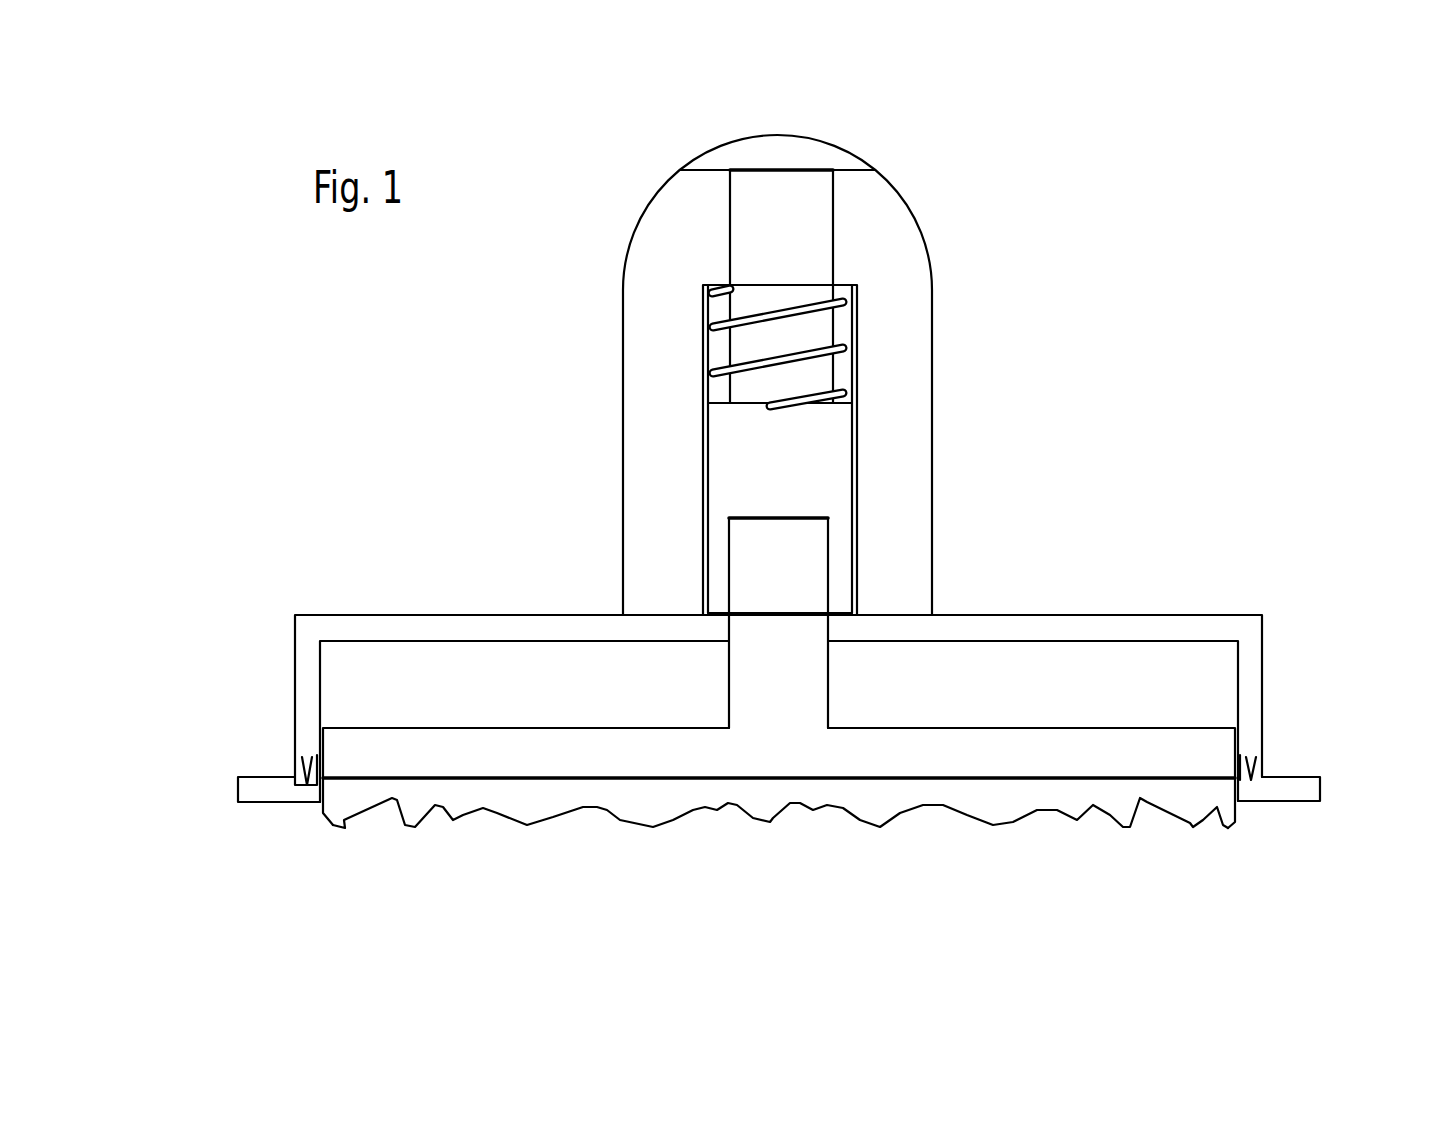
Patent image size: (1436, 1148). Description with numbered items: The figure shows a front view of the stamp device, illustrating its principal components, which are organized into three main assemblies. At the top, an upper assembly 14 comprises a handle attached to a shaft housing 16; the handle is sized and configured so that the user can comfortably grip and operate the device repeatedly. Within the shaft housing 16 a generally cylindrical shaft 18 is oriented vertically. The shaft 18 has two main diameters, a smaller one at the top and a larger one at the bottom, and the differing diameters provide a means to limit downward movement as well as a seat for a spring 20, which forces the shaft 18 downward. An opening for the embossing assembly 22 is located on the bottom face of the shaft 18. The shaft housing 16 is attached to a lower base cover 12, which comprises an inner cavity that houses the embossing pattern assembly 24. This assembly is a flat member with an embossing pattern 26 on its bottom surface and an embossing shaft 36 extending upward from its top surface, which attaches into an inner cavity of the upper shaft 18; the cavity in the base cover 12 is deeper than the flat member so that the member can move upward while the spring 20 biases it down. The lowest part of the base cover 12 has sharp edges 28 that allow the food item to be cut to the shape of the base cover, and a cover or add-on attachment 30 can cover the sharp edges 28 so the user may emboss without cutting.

The lower base cover assembly 12 is at (1133, 613).
The upper assembly 14 is at (906, 200).
The shaft housing 16 is at (857, 433).
The shaft 18 is at (748, 198).
The spring 20 is at (708, 358).
The opening for the embossing assembly 22 is at (718, 583).
The embossing pattern assembly 24 is at (1215, 752).
The embossing pattern 26 is at (1005, 799).
The sharp edges 28 is at (303, 783).
The cover or add-on attachment 30 is at (253, 795).
The embossing shaft 36 is at (778, 662).